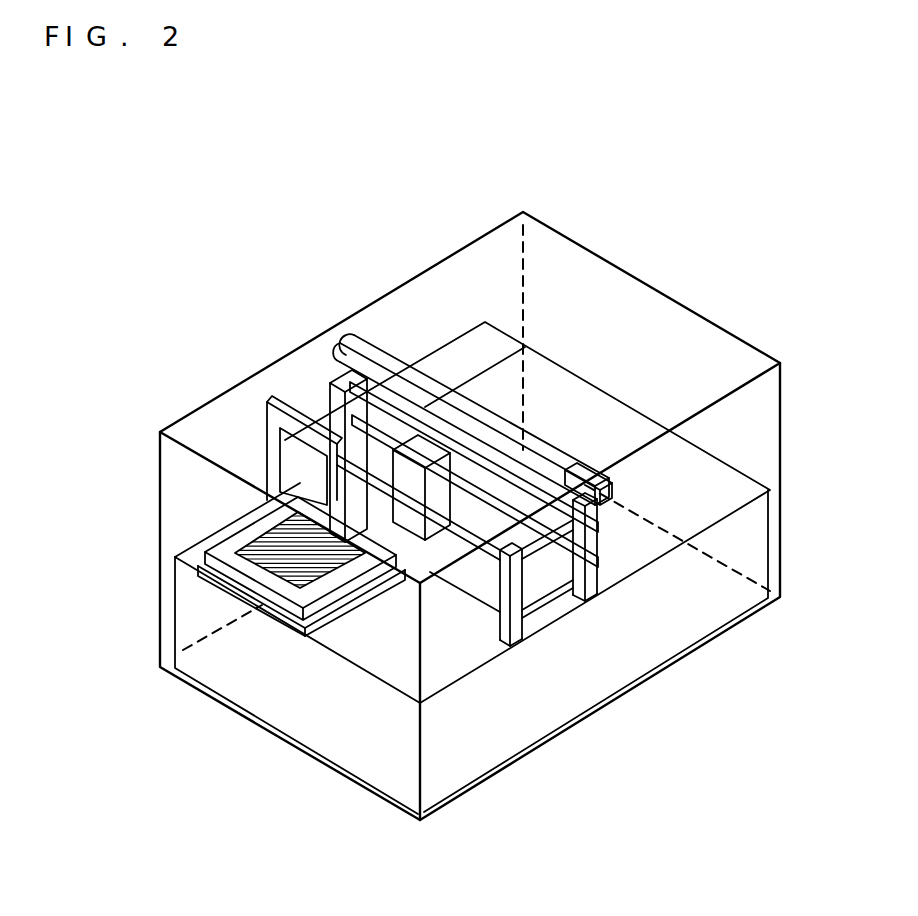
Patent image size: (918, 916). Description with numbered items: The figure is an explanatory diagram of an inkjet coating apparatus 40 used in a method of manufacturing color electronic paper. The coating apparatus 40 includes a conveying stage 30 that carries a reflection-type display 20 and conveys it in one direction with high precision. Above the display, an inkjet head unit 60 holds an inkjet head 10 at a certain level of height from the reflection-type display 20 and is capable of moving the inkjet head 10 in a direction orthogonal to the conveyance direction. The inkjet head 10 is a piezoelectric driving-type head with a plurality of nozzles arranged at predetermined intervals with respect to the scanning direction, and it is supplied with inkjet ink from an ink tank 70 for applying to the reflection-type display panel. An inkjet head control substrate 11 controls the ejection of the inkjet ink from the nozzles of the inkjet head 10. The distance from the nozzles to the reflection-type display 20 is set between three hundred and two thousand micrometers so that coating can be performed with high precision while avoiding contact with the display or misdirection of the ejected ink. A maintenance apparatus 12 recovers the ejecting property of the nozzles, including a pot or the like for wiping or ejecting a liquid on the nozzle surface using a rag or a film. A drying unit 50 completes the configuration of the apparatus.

The inkjet head 10 is at (347, 410).
The inkjet head control substrate 11 is at (250, 672).
The maintenance apparatus 12 is at (520, 603).
The reflection-type display 20 is at (262, 528).
The conveying stage 30 is at (212, 577).
The inkjet coating apparatus 40 is at (342, 318).
The drying unit 50 is at (425, 357).
The inkjet head unit 60 is at (277, 403).
The ink tank 70 is at (580, 528).